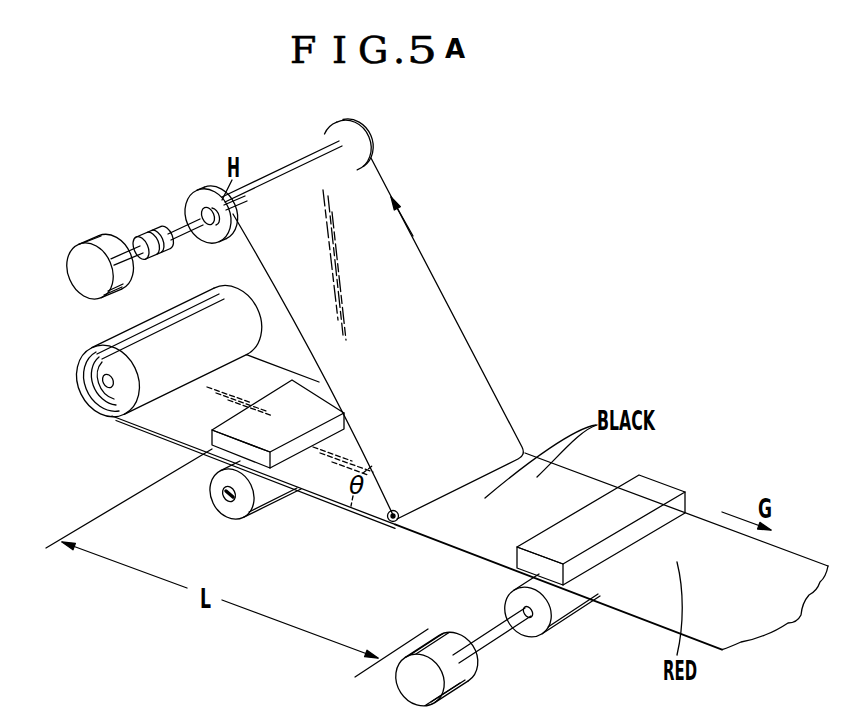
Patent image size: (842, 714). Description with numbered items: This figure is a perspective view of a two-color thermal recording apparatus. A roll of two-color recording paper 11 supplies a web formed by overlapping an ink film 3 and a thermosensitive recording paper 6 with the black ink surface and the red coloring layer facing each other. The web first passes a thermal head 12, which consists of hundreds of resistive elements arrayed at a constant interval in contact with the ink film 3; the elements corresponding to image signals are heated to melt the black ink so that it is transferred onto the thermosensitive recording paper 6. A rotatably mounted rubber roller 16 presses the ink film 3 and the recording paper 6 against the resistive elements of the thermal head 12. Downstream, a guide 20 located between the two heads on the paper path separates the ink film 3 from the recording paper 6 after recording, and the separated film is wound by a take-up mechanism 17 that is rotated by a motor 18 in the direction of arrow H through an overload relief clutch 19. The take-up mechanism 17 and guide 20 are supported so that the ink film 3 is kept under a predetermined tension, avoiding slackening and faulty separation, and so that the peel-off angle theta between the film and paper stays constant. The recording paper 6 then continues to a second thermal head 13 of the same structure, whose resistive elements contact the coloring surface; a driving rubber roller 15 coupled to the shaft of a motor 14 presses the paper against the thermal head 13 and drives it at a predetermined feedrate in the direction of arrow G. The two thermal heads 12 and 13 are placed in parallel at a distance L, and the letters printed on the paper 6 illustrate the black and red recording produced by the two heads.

The ink film 3 is at (493, 399).
The thermosensitive recording paper 6 is at (785, 566).
The roll of two-color recording paper 11 is at (112, 342).
The thermal head 12 is at (206, 447).
The thermal head 13 is at (649, 489).
The motor 14 is at (467, 676).
The driving rubber roller 15 is at (571, 610).
The rubber roller 16 is at (292, 500).
The take-up mechanism 17 is at (194, 196).
The motor 18 is at (97, 243).
The overload relief clutch 19 is at (141, 227).
The guide 20 is at (390, 522).